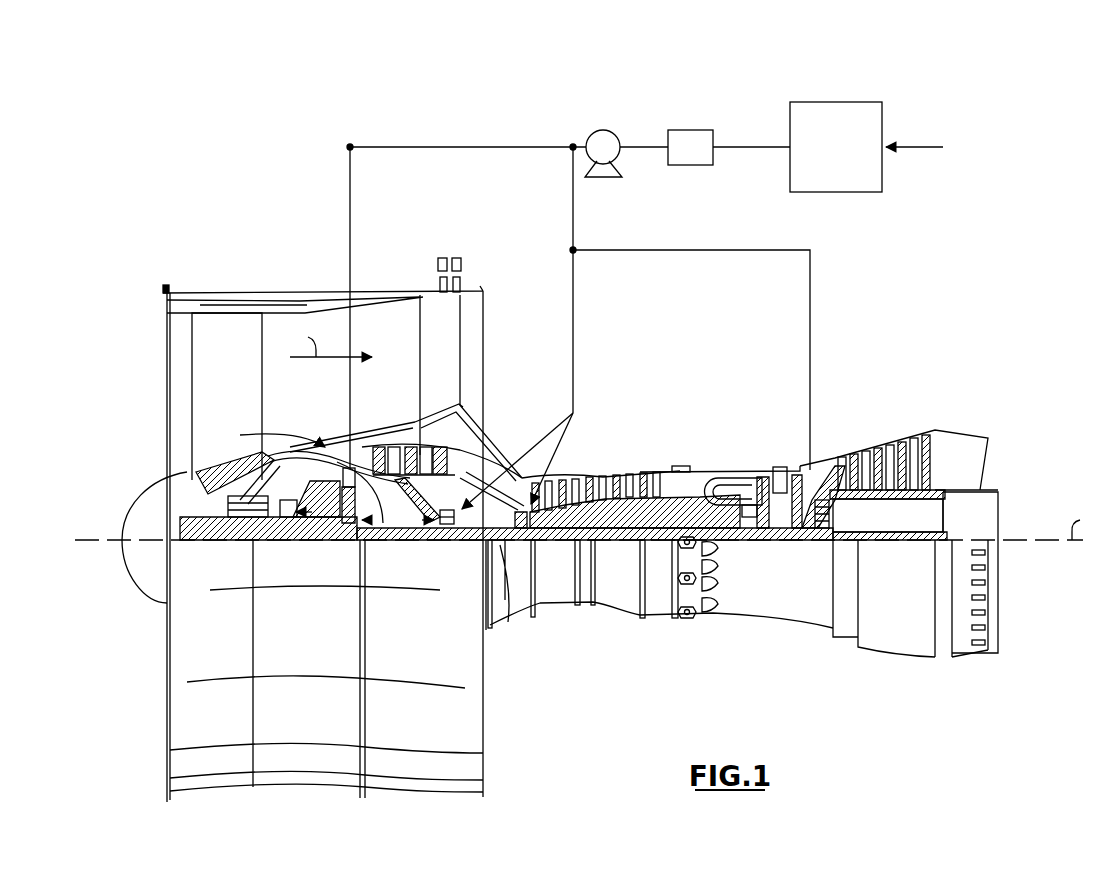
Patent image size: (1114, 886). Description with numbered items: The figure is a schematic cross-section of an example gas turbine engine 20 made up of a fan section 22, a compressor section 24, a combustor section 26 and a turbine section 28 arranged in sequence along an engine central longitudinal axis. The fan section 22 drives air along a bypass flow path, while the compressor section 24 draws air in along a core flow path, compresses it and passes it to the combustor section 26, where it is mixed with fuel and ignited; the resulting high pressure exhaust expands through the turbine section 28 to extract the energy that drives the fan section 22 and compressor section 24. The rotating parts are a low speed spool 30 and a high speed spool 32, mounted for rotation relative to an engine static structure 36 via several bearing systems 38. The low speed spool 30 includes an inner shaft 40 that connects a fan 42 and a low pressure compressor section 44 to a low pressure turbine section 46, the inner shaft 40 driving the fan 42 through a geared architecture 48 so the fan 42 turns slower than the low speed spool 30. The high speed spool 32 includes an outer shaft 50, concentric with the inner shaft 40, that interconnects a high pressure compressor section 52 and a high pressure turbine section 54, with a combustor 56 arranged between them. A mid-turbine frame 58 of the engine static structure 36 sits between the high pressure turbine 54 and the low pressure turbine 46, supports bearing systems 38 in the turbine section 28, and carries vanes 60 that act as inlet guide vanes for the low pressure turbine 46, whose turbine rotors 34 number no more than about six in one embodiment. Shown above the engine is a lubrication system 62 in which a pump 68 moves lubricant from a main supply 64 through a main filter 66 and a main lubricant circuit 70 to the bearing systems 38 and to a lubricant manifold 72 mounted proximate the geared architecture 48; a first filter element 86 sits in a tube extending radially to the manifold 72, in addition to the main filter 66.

The gas turbine engine 20 is at (726, 340).
The fan section 22 is at (155, 268).
The compressor section 24 is at (720, 393).
The combustor section 26 is at (722, 393).
The turbine section 28 is at (958, 393).
The low speed spool 30 is at (621, 550).
The high speed spool 32 is at (661, 470).
The turbine rotors 34 is at (905, 504).
The engine static structure 36 is at (658, 620).
The bearing systems 38 is at (236, 540).
The inner shaft 40 is at (506, 545).
The fan 42 is at (214, 404).
The low pressure compressor section 44 is at (427, 454).
The low pressure turbine section 46 is at (890, 436).
The geared architecture 48 is at (332, 522).
The outer shaft 50 is at (728, 524).
The high pressure compressor section 52 is at (602, 492).
The high pressure turbine section 54 is at (778, 467).
The combustor 56 is at (722, 488).
The mid-turbine frame 58 is at (817, 455).
The vanes 60 is at (846, 517).
The lubrication system 62 is at (732, 99).
The main supply 64 is at (824, 161).
The main filter 66 is at (690, 165).
The pump 68 is at (602, 130).
The main lubricant circuit 70 is at (457, 147).
The lubricant manifold 72 is at (344, 490).
The first filter element 86 is at (373, 537).